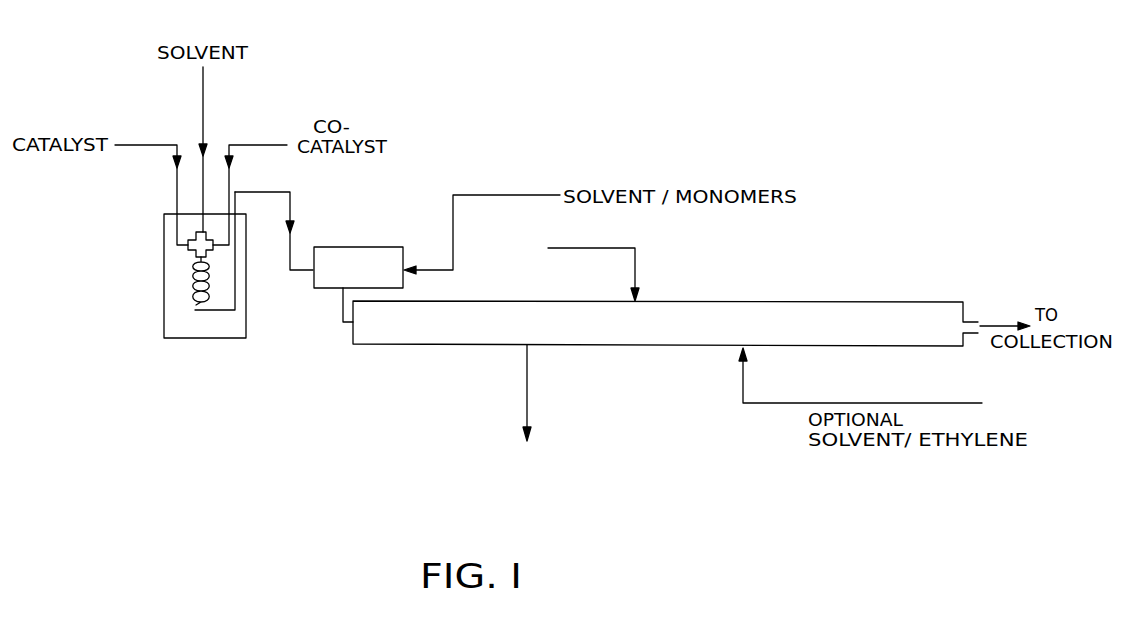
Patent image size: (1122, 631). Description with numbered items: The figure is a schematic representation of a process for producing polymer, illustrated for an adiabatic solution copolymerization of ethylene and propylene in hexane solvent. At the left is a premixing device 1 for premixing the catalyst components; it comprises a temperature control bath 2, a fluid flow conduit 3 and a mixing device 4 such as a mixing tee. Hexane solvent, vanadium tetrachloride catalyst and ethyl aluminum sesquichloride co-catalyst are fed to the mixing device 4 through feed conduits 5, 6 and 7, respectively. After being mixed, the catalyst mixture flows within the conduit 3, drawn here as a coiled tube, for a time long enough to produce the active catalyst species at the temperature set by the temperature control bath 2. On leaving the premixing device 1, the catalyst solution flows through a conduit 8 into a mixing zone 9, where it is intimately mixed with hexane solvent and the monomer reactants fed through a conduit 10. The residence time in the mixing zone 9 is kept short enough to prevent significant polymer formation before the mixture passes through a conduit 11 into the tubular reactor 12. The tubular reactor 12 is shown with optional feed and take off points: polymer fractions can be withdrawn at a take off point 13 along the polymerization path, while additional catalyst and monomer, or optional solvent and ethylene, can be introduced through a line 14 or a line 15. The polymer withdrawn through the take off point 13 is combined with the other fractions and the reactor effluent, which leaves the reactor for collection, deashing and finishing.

The premixing device 1 is at (187, 265).
The temperature control bath 2 is at (232, 323).
The fluid flow conduit 3 is at (196, 305).
The mixing device 4 is at (187, 250).
The feed conduit 5 is at (204, 90).
The feed conduit 6 is at (137, 145).
The feed conduit 7 is at (250, 145).
The conduit 8 is at (258, 192).
The mixing zone 9 is at (357, 247).
The conduit 10 is at (497, 195).
The conduit 11 is at (342, 303).
The tubular reactor 12 is at (668, 347).
The take off point 13 is at (528, 402).
The line 14 is at (623, 248).
The line 15 is at (763, 407).